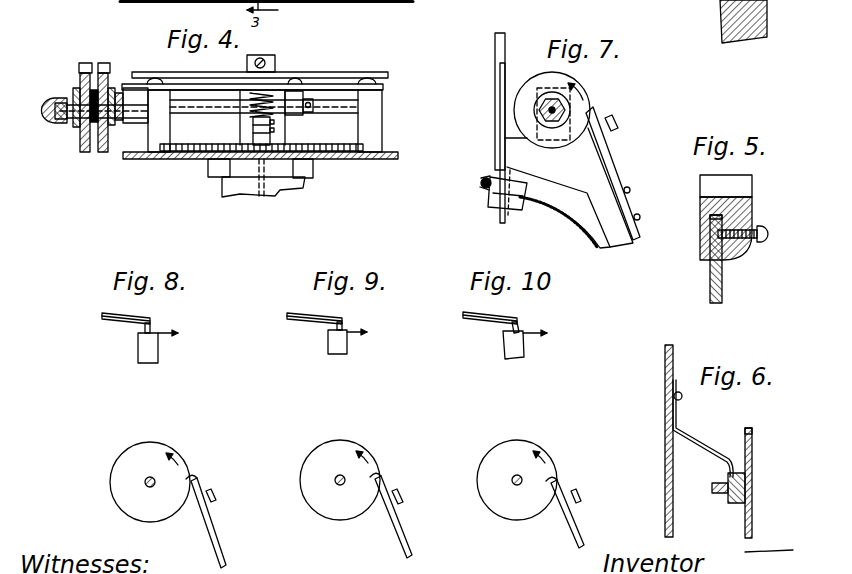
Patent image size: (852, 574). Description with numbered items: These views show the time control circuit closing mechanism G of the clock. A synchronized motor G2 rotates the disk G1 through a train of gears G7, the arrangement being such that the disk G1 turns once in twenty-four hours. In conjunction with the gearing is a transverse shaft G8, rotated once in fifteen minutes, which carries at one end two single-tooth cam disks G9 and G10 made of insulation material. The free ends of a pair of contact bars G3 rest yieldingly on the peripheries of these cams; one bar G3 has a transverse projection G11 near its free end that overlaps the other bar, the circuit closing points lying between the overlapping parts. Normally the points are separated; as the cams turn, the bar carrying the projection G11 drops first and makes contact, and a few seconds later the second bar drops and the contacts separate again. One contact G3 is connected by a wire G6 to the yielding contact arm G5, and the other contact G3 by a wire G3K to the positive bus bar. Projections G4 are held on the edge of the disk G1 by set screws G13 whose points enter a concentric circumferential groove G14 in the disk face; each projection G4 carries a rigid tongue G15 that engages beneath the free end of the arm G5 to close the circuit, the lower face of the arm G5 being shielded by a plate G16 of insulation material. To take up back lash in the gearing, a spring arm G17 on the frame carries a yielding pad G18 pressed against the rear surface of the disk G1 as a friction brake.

In FIG. 4, the time control circuit closing mechanism G is at (157, 160).
In FIG. 7, the time control circuit closing mechanism G is at (495, 50).
In FIG. 6, the time control circuit closing mechanism G is at (665, 452).
In FIG. 4, the disk G1 is at (337, 67).
In FIG. 5, the disk G1 is at (722, 296).
In FIG. 6, the disk G1 is at (752, 457).
In FIG. 4, the synchronized motor G2 is at (240, 188).
In FIG. 4, the contacts G3 is at (100, 65).
In FIG. 7, the contacts G3 is at (608, 128).
In FIG. 8, the contacts G3 is at (203, 500).
In FIG. 9, the contacts G3 is at (390, 503).
In FIG. 10, the contacts G3 is at (568, 505).
In FIG. 7, the wire G3K is at (485, 190).
In FIG. 5, the projections G4 is at (700, 218).
In FIG. 8, the projections G4 is at (158, 358).
In FIG. 9, the projections G4 is at (347, 349).
In FIG. 10, the projections G4 is at (524, 351).
In FIG. 8, the yielding contact arm G5 is at (152, 320).
In FIG. 9, the yielding contact arm G5 is at (344, 319).
In FIG. 10, the yielding contact arm G5 is at (518, 320).
In FIG. 7, the wire G6 is at (487, 178).
In FIG. 4, the train of gears G7 is at (310, 118).
In FIG. 4, the transverse shaft G8 is at (213, 107).
In FIG. 7, the transverse shaft G8 is at (540, 110).
In FIG. 8, the transverse shaft G8 is at (148, 482).
In FIG. 9, the transverse shaft G8 is at (338, 482).
In FIG. 10, the transverse shaft G8 is at (515, 483).
In FIG. 4, the cam disk G9 is at (78, 90).
In FIG. 7, the cam disk G9 is at (586, 90).
In FIG. 8, the cam disk G9 is at (125, 460).
In FIG. 9, the cam disk G9 is at (310, 461).
In FIG. 10, the cam disk G9 is at (490, 457).
In FIG. 4, the cam disk G10 is at (107, 80).
In FIG. 7, the transverse projection G11 is at (614, 120).
In FIG. 8, the transverse projection G11 is at (215, 510).
In FIG. 9, the transverse projection G11 is at (403, 510).
In FIG. 10, the transverse projection G11 is at (578, 508).
In FIG. 5, the set screw G13 is at (760, 243).
In FIG. 5, the concentric circumferential groove G14 is at (722, 218).
In FIG. 6, the concentric circumferential groove G14 is at (752, 442).
In FIG. 5, the rigid tongue G15 is at (752, 182).
In FIG. 8, the rigid tongue G15 is at (155, 330).
In FIG. 9, the rigid tongue G15 is at (346, 328).
In FIG. 10, the rigid tongue G15 is at (522, 329).
In FIG. 8, the plate of insulation material G16 is at (115, 322).
In FIG. 9, the plate of insulation material G16 is at (305, 322).
In FIG. 10, the plate of insulation material G16 is at (485, 321).
In FIG. 6, the spring arm G17 is at (712, 432).
In FIG. 6, the yielding pad G18 is at (745, 490).